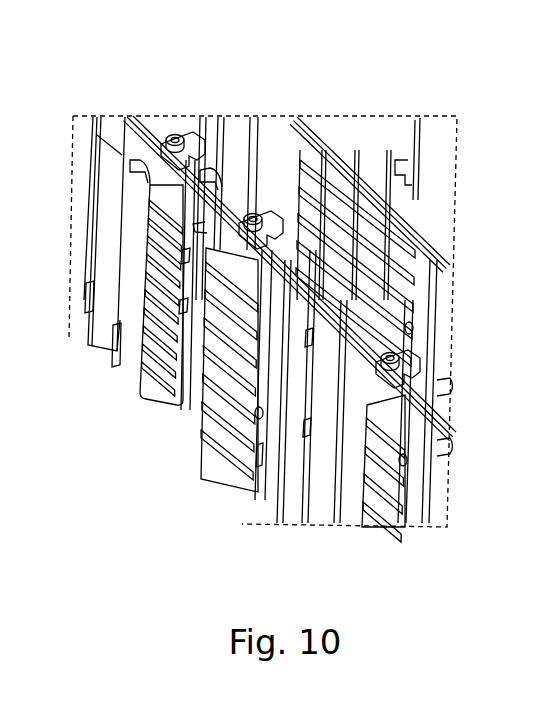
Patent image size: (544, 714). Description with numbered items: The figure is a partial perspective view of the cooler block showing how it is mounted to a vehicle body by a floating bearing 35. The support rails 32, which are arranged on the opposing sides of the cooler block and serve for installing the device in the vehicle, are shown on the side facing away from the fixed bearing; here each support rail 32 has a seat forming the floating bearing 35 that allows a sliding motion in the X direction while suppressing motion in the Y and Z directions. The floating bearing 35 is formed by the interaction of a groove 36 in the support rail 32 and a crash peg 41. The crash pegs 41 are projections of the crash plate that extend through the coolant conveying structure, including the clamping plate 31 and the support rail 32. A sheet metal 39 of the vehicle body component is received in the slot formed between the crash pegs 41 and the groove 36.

The clamping plate 31 is at (337, 150).
The support rail 32 is at (192, 137).
The floating bearing 35 is at (170, 188).
The groove 36 is at (207, 130).
The sheet metal 39 is at (138, 116).
The crash peg 41 is at (172, 130).